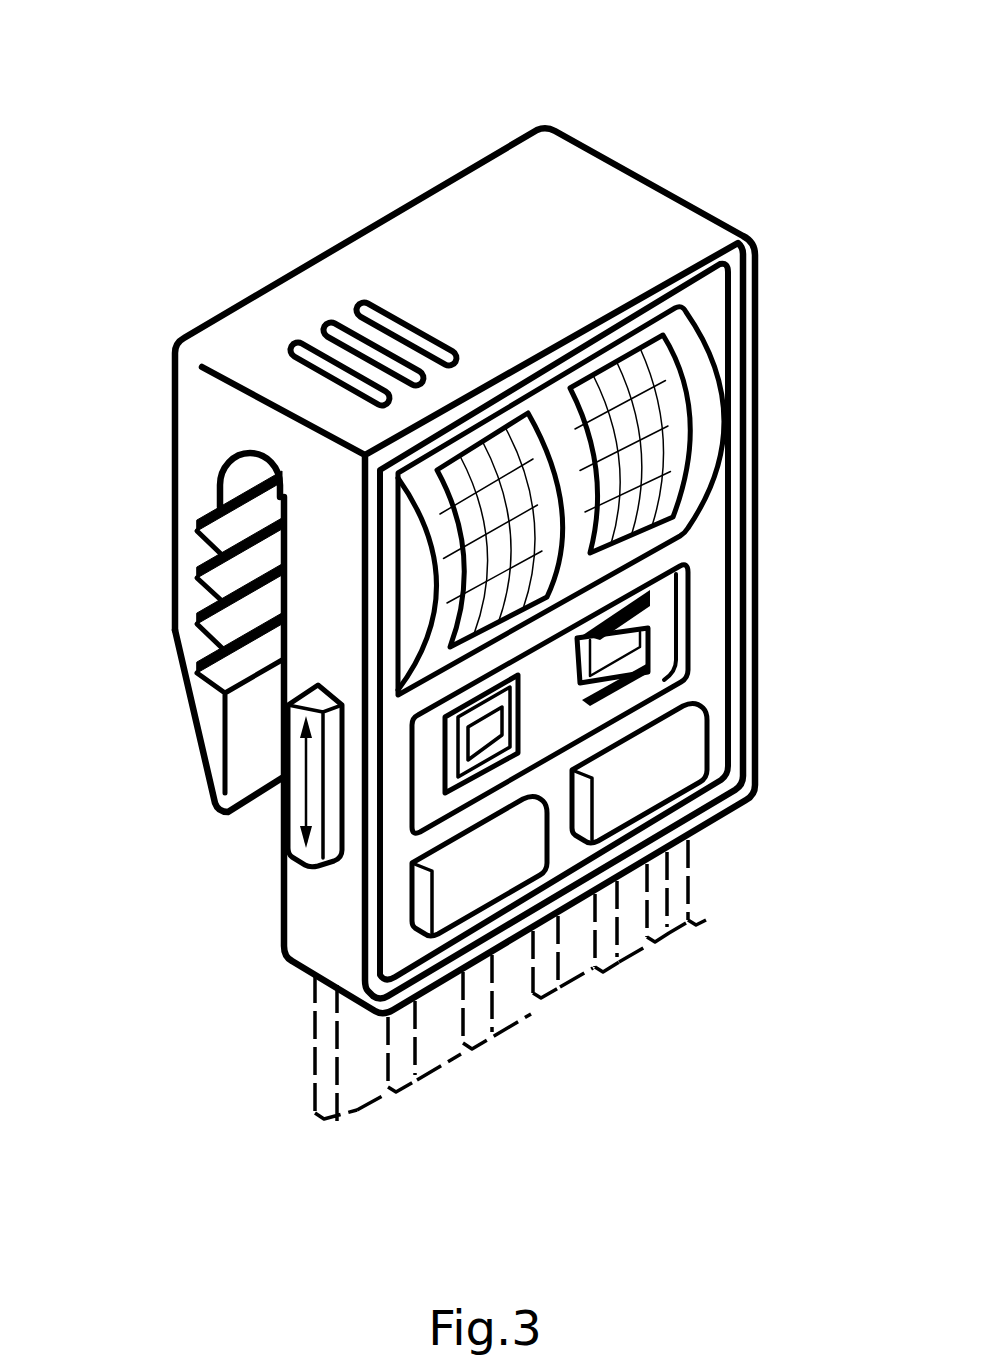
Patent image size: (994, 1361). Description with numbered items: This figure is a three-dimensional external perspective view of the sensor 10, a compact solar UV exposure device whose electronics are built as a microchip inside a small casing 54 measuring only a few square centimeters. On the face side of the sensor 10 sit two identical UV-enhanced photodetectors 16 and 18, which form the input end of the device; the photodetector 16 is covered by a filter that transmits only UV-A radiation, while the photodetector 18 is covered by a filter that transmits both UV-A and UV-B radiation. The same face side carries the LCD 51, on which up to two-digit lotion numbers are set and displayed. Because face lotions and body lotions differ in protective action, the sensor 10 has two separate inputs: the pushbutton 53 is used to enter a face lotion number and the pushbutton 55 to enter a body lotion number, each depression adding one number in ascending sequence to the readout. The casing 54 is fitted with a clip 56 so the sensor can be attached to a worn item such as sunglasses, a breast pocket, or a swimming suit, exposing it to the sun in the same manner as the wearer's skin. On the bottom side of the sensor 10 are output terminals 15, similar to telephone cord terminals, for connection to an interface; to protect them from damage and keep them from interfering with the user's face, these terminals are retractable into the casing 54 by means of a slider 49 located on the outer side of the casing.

The sensor 10 is at (405, 175).
The output terminals 15 is at (545, 983).
The photodetector 16 is at (495, 487).
The photodetector 18 is at (653, 420).
The slider 49 is at (317, 852).
The LCD 51 is at (663, 647).
The pushbutton 53 is at (443, 923).
The casing 54 is at (707, 530).
The pushbutton 55 is at (695, 762).
The clip 56 is at (190, 393).